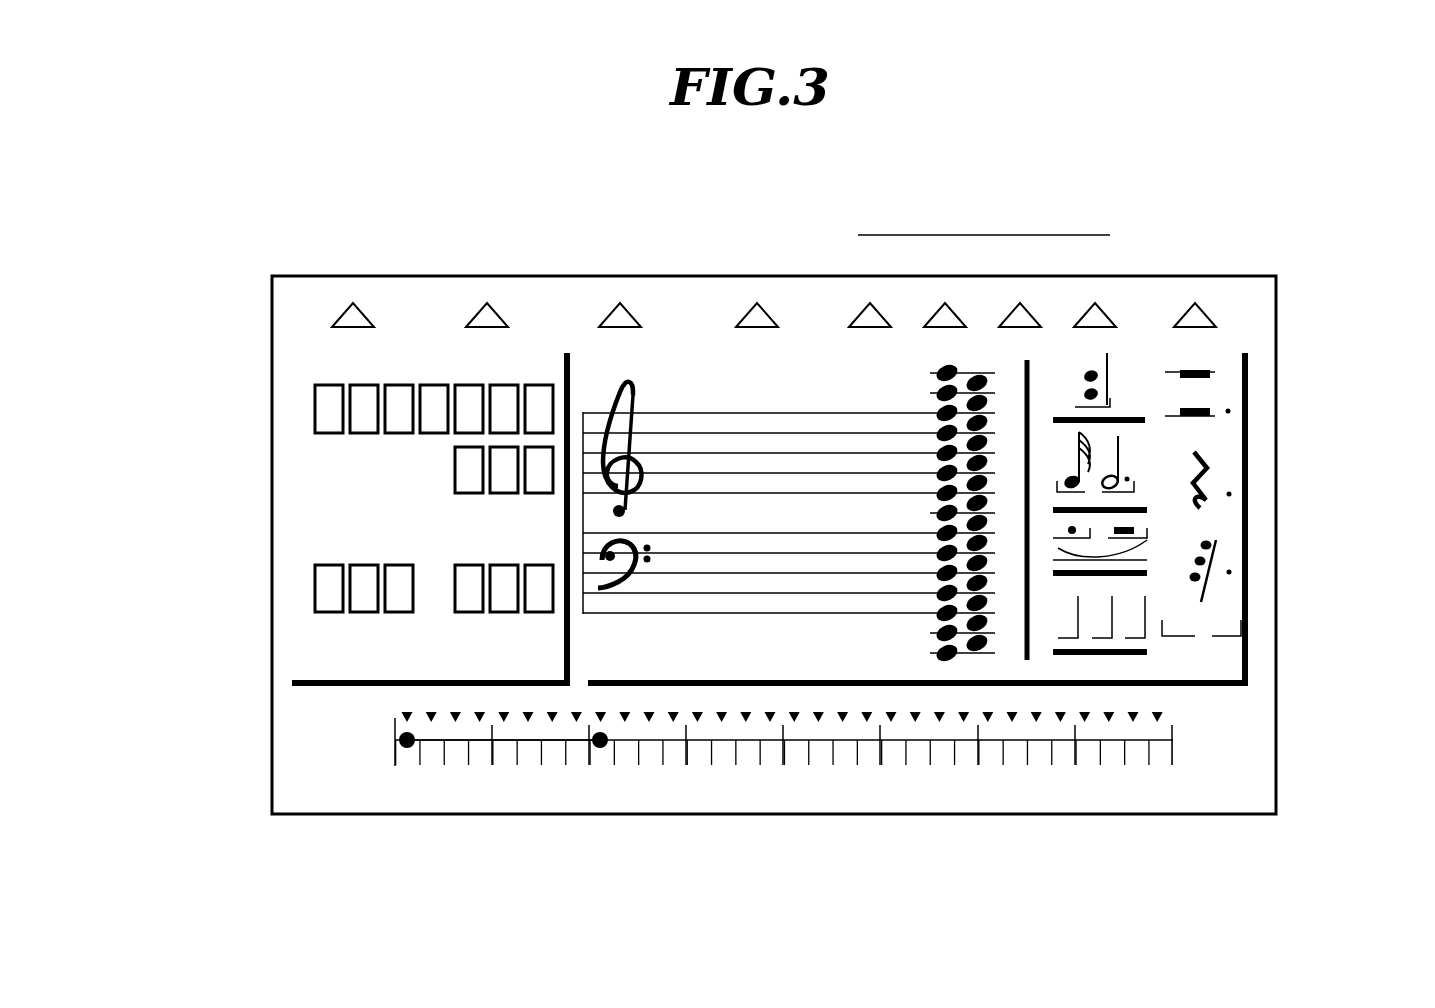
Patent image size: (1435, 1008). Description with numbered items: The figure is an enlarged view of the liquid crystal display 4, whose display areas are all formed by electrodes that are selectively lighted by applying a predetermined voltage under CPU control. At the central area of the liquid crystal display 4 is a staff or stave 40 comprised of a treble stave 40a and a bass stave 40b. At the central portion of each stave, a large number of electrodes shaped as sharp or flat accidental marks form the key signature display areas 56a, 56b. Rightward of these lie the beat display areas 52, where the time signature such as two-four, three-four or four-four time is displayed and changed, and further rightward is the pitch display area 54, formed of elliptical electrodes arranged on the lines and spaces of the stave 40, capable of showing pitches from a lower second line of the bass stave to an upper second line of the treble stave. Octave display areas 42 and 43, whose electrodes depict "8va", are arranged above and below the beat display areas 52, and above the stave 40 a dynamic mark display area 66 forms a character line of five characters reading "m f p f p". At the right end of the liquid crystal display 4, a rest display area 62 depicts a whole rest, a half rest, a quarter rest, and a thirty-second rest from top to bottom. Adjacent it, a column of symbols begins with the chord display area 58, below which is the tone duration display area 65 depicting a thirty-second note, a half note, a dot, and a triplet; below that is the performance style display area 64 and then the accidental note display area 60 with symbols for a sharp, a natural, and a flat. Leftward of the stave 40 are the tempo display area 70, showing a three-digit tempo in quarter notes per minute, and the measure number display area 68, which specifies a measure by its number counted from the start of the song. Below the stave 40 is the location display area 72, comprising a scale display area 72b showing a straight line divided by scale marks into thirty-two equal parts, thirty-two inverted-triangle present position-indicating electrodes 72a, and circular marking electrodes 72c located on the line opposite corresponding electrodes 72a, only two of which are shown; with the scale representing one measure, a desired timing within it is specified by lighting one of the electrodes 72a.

The liquid crystal display 4 is at (1290, 250).
The staff or stave 40 is at (590, 420).
The treble stave 40a is at (608, 398).
The bass stave 40b is at (617, 600).
The octave display area 42 is at (843, 365).
The octave display area 43 is at (880, 662).
The beat display area 52 is at (905, 425).
The pitch display area 54 is at (997, 643).
The key signature display area 56a is at (790, 378).
The key signature display area 56b is at (695, 600).
The chord display area 58 is at (1108, 365).
The accidental note display area 60 is at (1153, 640).
The rest display area 62 is at (1218, 443).
The performance style display area 64 is at (1060, 552).
The tone duration display area 65 is at (1128, 468).
The dynamic mark display area 66 is at (672, 340).
The measure number display area 68 is at (338, 621).
The tempo display area 70 is at (483, 622).
The location display area 72 is at (333, 722).
The present position-indicating electrodes 72a is at (397, 710).
The scale display area 72b is at (392, 745).
The marking electrodes 72c is at (600, 745).